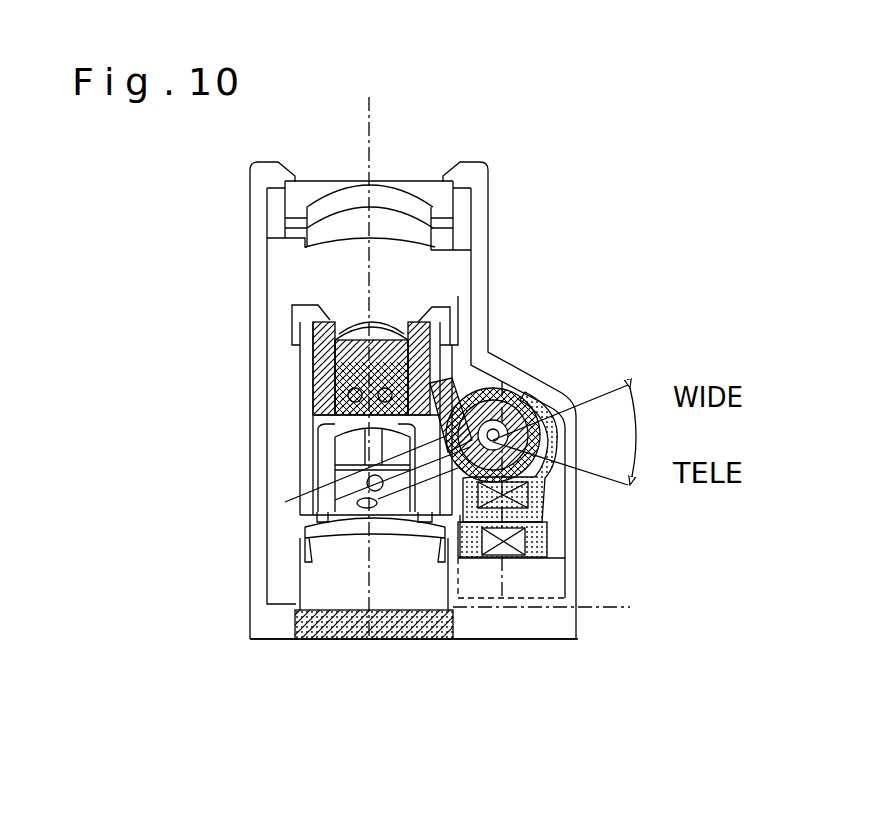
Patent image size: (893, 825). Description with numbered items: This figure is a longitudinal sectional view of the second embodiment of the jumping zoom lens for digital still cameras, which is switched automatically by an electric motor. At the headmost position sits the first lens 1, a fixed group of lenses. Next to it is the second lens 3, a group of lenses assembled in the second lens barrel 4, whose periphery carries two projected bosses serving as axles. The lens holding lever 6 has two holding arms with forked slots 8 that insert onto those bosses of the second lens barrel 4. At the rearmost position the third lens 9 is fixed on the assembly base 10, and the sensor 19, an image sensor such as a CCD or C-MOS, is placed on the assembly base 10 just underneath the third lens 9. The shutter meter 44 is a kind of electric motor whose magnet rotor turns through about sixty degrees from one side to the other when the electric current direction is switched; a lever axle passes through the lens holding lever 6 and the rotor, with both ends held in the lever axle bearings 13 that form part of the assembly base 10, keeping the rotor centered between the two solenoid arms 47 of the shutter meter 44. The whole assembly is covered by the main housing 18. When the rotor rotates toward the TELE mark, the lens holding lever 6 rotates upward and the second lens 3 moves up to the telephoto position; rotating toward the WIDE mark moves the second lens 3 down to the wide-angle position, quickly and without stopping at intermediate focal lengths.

The first lens 1 is at (409, 170).
The second lens 3 is at (393, 328).
The second lens barrel 4 is at (438, 314).
The lens holding lever 6 is at (461, 382).
The forked slots 8 is at (313, 365).
The third lens 9 is at (352, 534).
The assembly base 10 is at (280, 622).
The lever axle bearings 13 is at (510, 390).
The main housing 18 is at (256, 271).
The sensor 19 is at (343, 650).
The shutter meter 44 is at (525, 500).
The solenoid arms 47 is at (549, 468).